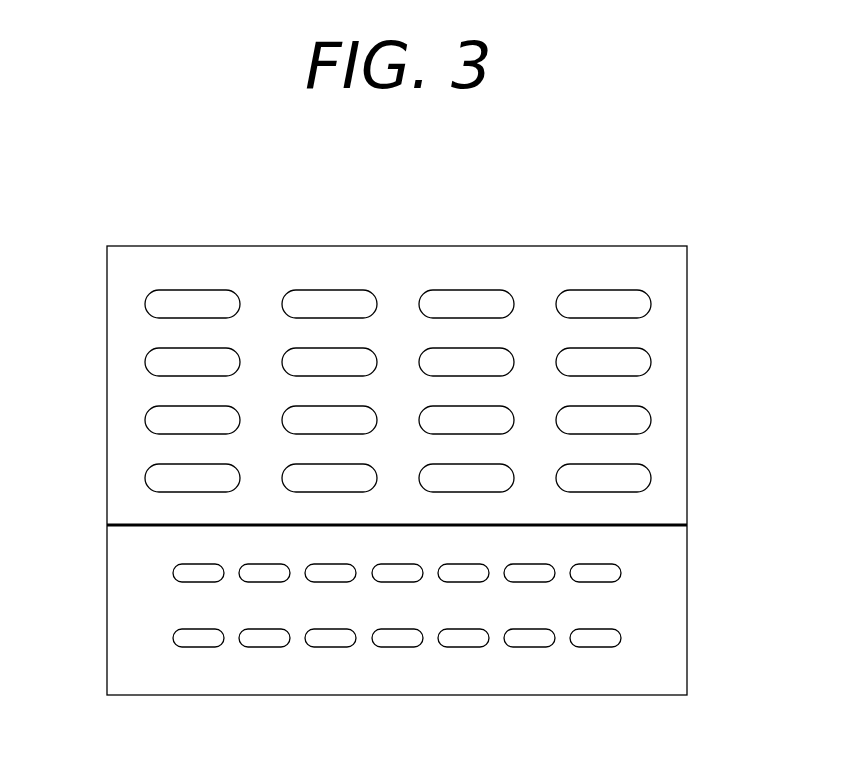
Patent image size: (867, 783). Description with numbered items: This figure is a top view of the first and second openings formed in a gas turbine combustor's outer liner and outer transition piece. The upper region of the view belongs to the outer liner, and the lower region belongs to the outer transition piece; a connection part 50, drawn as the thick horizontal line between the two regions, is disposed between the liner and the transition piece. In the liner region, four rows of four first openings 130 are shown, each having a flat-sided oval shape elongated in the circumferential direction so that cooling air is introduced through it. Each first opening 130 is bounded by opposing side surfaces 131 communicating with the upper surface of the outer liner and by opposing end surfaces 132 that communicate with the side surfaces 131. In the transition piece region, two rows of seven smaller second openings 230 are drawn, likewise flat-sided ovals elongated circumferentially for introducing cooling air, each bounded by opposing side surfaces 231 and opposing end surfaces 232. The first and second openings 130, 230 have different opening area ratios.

The connection part 50 is at (145, 524).
The first opening 130 is at (450, 290).
The opposing side surfaces 131 is at (603, 350).
The opposing end surfaces 132 is at (648, 300).
The second opening 230 is at (402, 647).
The opposing side surfaces 231 is at (197, 573).
The opposing end surfaces 232 is at (180, 641).